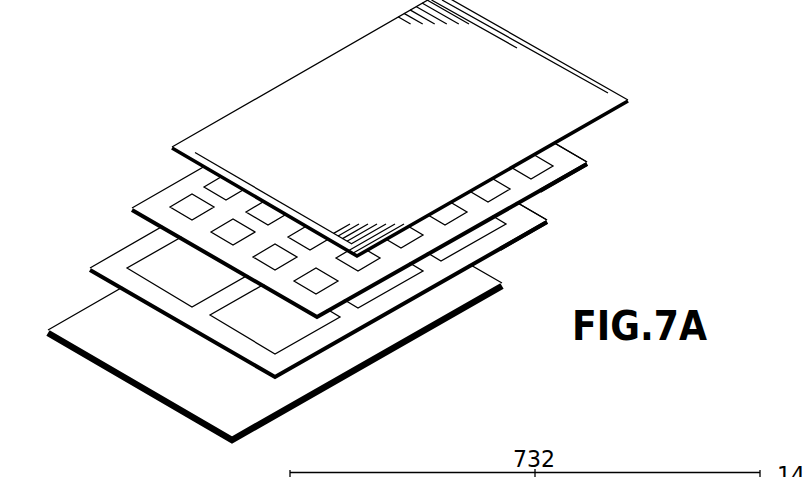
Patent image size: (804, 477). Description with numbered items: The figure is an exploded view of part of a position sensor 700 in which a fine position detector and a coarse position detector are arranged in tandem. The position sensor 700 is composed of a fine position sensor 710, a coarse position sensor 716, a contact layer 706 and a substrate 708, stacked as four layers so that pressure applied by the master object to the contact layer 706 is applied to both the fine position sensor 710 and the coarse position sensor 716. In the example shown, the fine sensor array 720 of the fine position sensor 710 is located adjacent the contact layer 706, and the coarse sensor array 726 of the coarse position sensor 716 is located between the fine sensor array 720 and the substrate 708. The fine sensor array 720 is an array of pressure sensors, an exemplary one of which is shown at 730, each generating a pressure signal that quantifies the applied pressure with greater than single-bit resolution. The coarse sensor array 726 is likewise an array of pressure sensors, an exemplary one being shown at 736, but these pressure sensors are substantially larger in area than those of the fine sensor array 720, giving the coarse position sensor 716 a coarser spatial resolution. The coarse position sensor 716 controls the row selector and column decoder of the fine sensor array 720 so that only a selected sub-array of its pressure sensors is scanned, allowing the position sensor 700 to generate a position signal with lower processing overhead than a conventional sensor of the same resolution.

The position sensor 700 is at (305, 62).
The contact layer 706 is at (565, 64).
The substrate 708 is at (503, 284).
The fine position sensor 710 is at (587, 161).
The coarse position sensor 716 is at (547, 220).
The fine sensor array 720 is at (153, 186).
The coarse sensor array 726 is at (112, 246).
The pressure sensor 730 is at (558, 176).
The pressure sensor 736 is at (518, 237).